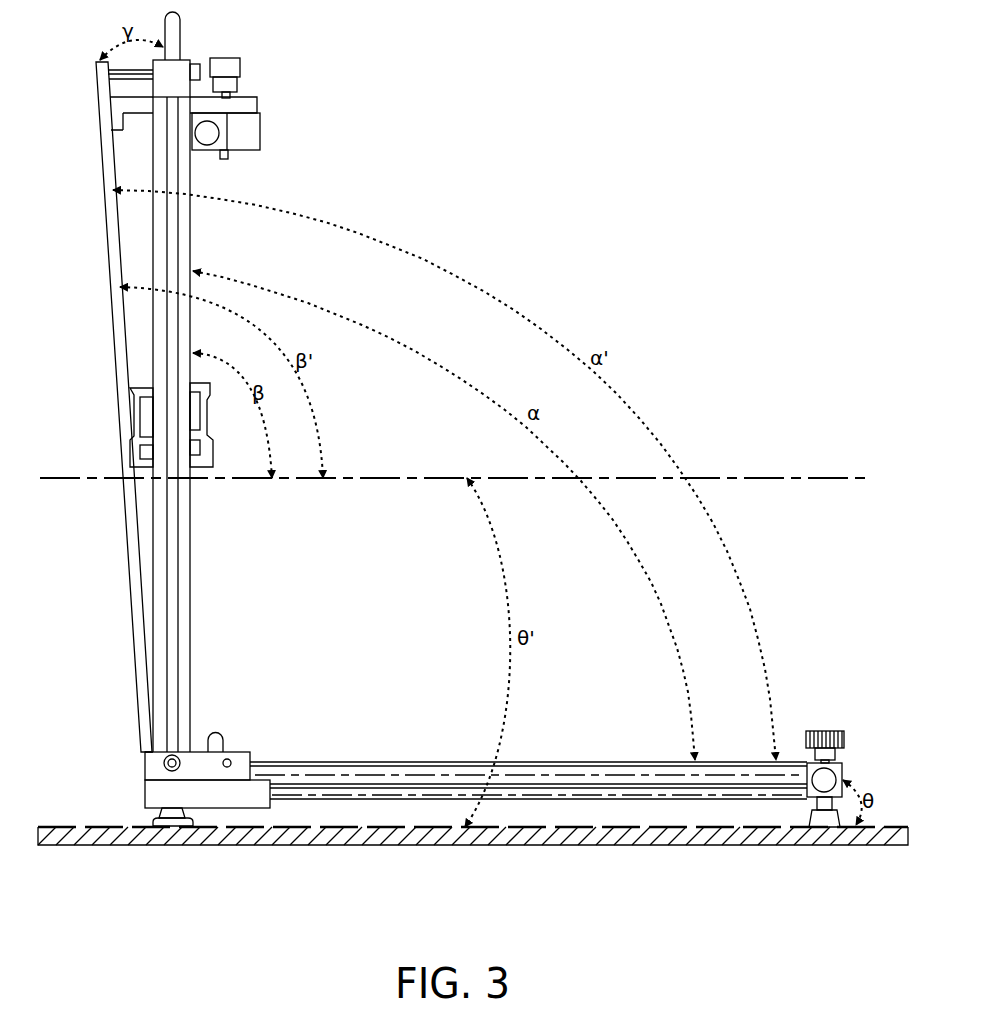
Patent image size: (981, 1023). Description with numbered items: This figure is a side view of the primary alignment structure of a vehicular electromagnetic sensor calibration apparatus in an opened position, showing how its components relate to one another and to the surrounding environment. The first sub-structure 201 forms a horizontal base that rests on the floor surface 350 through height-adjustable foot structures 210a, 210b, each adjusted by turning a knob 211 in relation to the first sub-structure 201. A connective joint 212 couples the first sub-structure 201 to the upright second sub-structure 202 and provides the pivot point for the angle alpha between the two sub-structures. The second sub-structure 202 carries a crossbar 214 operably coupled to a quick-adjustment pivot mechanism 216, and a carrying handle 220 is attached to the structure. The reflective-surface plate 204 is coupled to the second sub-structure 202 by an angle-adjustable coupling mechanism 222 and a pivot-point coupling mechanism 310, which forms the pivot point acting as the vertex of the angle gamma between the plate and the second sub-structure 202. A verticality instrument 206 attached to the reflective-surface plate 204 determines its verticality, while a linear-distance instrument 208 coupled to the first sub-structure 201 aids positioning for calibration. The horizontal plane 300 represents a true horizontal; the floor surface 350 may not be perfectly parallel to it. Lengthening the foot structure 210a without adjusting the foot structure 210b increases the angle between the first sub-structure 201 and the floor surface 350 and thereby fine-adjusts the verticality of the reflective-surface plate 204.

The first sub-structure 201 is at (557, 762).
The second sub-structure 202 is at (179, 565).
The reflective-surface plate 204 is at (140, 586).
The verticality instrument 206 is at (147, 412).
The linear-distance instrument 208 is at (269, 808).
The height-adjustable foot structure 210a is at (824, 828).
The height-adjustable foot structure 210b is at (175, 828).
The knob 211 is at (824, 731).
The connective joint 212 is at (228, 750).
The crossbar 214 is at (253, 135).
The quick-adjustment pivot mechanism 216 is at (230, 97).
The carrying handle 220 is at (178, 17).
The angle-adjustable coupling mechanism 222 is at (135, 75).
The horizontal plane 300 is at (823, 471).
The pivot-point coupling mechanism 310 is at (137, 744).
The floor surface 350 is at (68, 826).